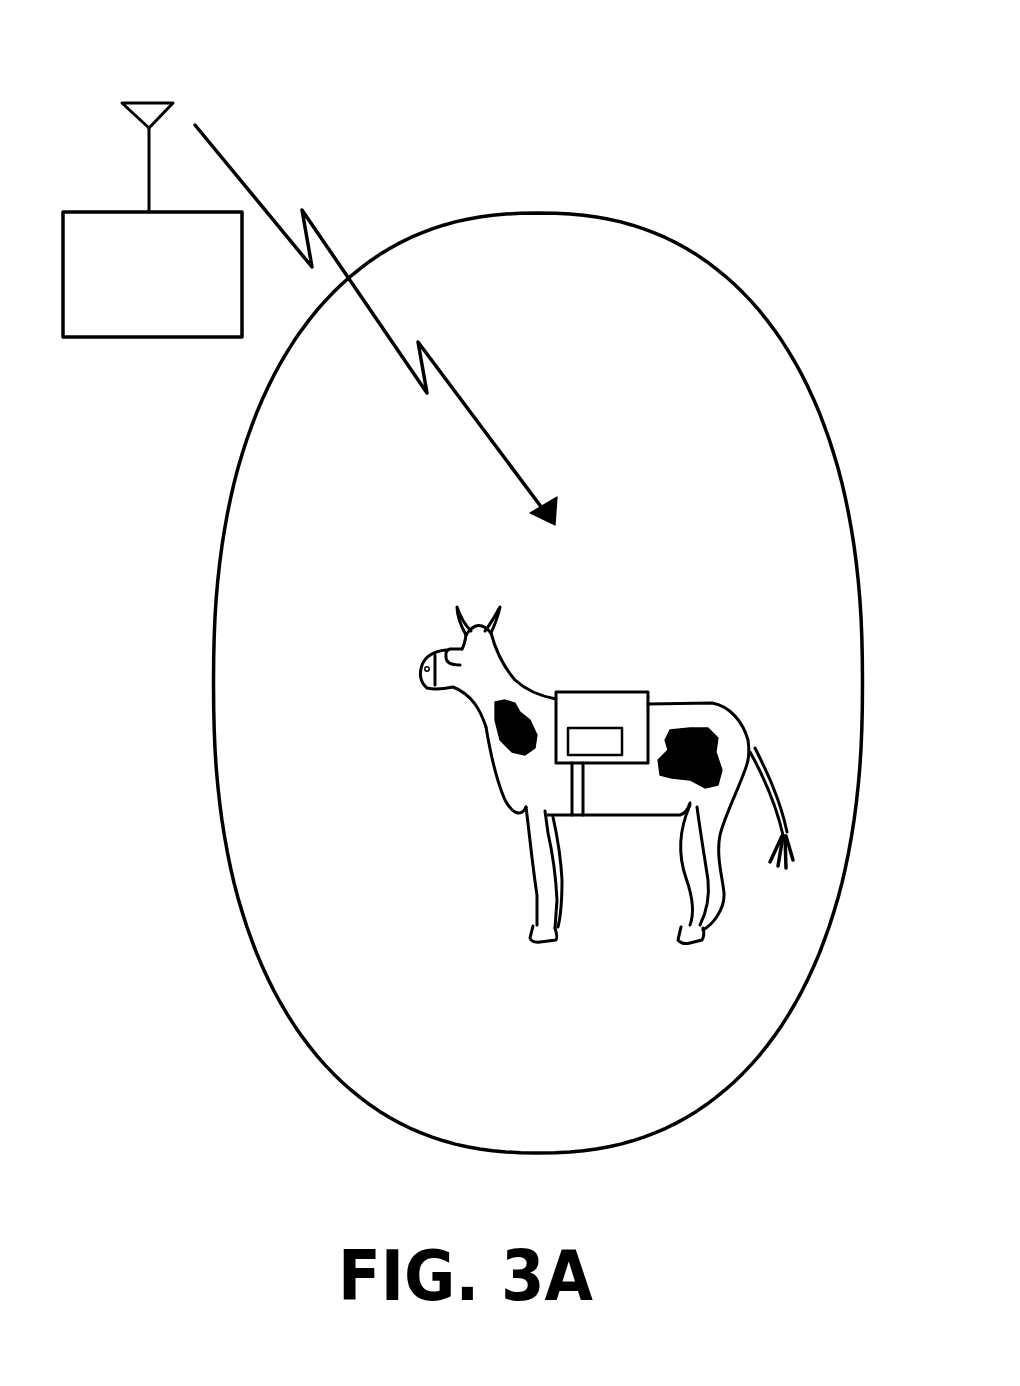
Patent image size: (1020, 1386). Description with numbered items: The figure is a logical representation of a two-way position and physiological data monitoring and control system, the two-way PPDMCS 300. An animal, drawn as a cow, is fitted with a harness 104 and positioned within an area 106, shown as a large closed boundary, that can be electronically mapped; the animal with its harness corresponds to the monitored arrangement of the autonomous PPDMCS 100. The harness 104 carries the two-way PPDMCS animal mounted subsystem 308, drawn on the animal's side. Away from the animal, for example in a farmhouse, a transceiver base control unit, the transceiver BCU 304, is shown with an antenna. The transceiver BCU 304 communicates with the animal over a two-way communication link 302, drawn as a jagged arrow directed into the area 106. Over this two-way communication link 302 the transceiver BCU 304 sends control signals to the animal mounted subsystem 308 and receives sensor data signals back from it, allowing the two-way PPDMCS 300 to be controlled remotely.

The two-way position and physiological data monitoring and control system 300 is at (158, 38).
The two-way communication link 302 is at (240, 172).
The transceiver base control unit 304 is at (123, 318).
The area 106 is at (450, 222).
The autonomous position and physiological data monitoring and control system 100 is at (645, 649).
The harness 104 is at (653, 700).
The two-way PPDMCS animal mounted subsystem 308 is at (595, 742).